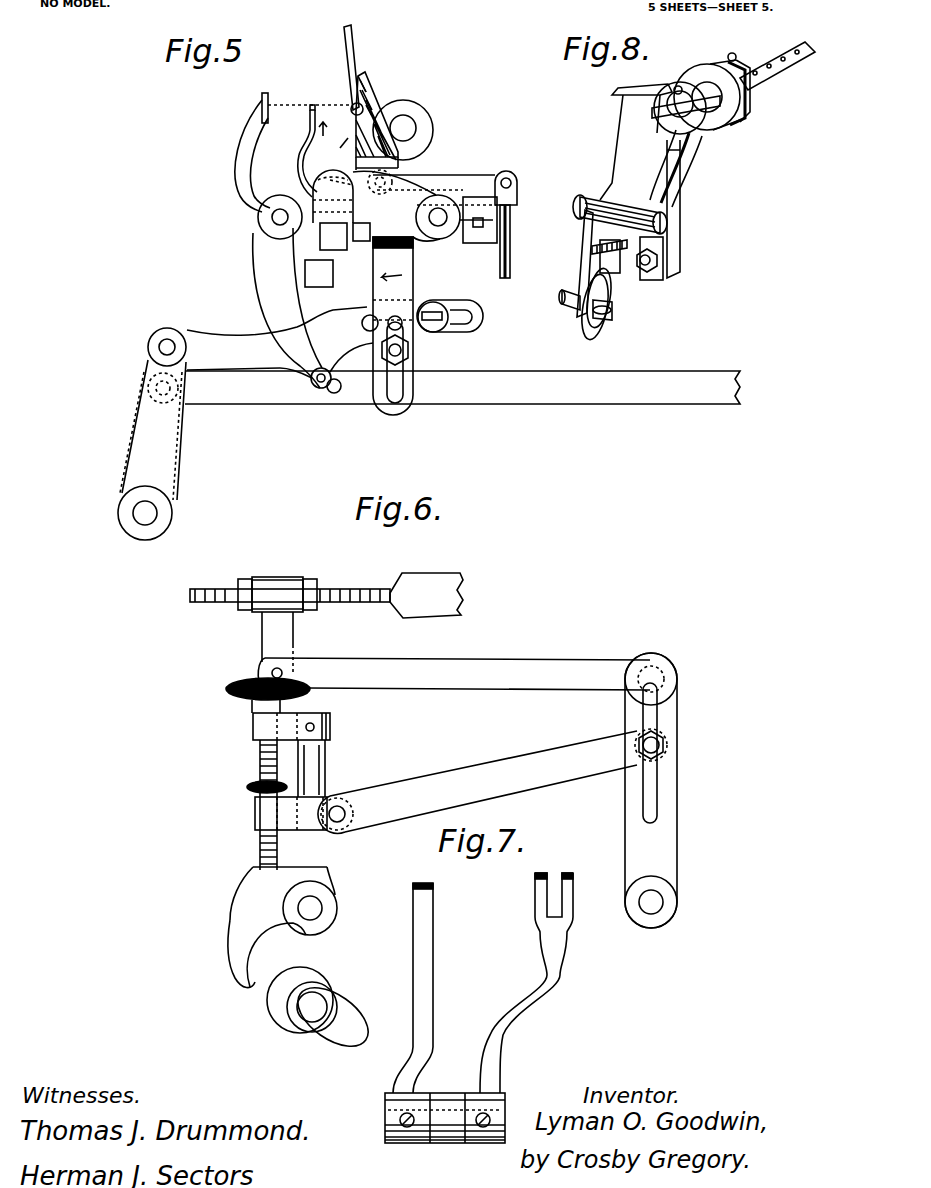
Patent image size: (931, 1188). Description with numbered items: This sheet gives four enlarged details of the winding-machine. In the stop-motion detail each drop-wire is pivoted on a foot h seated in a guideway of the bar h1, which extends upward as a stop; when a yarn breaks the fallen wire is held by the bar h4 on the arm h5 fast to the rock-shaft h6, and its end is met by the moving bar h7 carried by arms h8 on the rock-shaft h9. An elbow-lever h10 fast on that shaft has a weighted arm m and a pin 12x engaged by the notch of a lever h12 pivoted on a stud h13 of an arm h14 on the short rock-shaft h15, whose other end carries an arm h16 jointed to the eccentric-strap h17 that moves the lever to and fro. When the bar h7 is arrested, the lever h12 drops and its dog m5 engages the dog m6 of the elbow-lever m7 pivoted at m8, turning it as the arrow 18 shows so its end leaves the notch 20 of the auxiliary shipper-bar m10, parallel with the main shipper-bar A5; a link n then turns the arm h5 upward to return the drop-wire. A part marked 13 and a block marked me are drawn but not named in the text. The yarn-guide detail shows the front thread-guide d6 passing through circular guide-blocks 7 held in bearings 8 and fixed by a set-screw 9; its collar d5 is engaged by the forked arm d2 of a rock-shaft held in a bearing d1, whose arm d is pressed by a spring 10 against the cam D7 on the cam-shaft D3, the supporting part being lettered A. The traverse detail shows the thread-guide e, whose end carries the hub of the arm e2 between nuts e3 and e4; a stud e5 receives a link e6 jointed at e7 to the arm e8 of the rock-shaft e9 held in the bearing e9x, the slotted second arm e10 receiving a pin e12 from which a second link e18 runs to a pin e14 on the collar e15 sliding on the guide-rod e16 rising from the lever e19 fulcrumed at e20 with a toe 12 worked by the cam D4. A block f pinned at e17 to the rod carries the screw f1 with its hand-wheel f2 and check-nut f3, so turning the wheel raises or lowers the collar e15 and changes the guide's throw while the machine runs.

In FIG. 5, the lever 13 is at (334, 70).
In FIG. 5, the bar h1 is at (370, 100).
In FIG. 5, the foot h is at (370, 125).
In FIG. 5, the moving bar h7 is at (262, 99).
In FIG. 5, the arms h8 is at (237, 172).
In FIG. 5, the bar h4 is at (310, 120).
In FIG. 5, the arm h5 is at (299, 158).
In FIG. 5, the arm m is at (308, 197).
In FIG. 5, the thread-guide e is at (310, 126).
In FIG. 6, the thread-guide e is at (326, 592).
In FIG. 5, the rock-shaft h6 is at (403, 170).
In FIG. 5, the rock-shaft h9 is at (278, 218).
In FIG. 5, the notch 20 is at (323, 228).
In FIG. 5, the auxiliary shipper-bar m10 is at (361, 243).
In FIG. 5, the arrow 18 is at (371, 326).
In FIG. 5, the elbow-lever m7 is at (374, 283).
In FIG. 5, the shipper-bar A5 is at (323, 287).
In FIG. 5, the pivot m8 is at (440, 223).
In FIG. 5, the block me is at (477, 243).
In FIG. 5, the link n is at (512, 267).
In FIG. 5, the elbow-lever h10 is at (258, 268).
In FIG. 5, the lever h12 is at (222, 332).
In FIG. 5, the stud h13 is at (166, 338).
In FIG. 5, the arm h14 is at (147, 370).
In FIG. 5, the arm h16 is at (160, 441).
In FIG. 5, the short rock-shaft h15 is at (136, 513).
In FIG. 5, the pin 12x is at (313, 393).
In FIG. 5, the eccentric-strap h17 is at (543, 377).
In FIG. 5, the dog m5 is at (463, 337).
In FIG. 5, the dog m6 is at (415, 354).
In FIG. 8, the front thread-guide d6 is at (790, 48).
In FIG. 8, the bearings 8 is at (720, 60).
In FIG. 8, the set-screw 9 is at (736, 54).
In FIG. 8, the collar d5 is at (712, 143).
In FIG. 8, the guide-blocks 7 is at (705, 85).
In FIG. 8, the bracket plate A is at (615, 160).
In FIG. 8, the arm d2 is at (690, 167).
In FIG. 8, the bearing d1 is at (660, 235).
In FIG. 8, the spring 10 is at (625, 242).
In FIG. 8, the arm d is at (577, 267).
In FIG. 8, the cam-shaft D3 is at (612, 312).
In FIG. 6, the cam-shaft D3 is at (315, 1003).
In FIG. 8, the cam D7 is at (610, 333).
In FIG. 6, the nut e3 is at (243, 580).
In FIG. 6, the nut e4 is at (315, 581).
In FIG. 6, the arm e2 is at (262, 630).
In FIG. 6, the stud e5 is at (272, 673).
In FIG. 6, the link e6 is at (454, 663).
In FIG. 6, the hand-wheel f2 is at (227, 687).
In FIG. 6, the pin e17 is at (306, 726).
In FIG. 6, the block f is at (260, 745).
In FIG. 6, the screw f1 is at (260, 770).
In FIG. 6, the check-nut f3 is at (250, 790).
In FIG. 6, the collar e15 is at (257, 817).
In FIG. 6, the guide-rod e16 is at (325, 770).
In FIG. 6, the pin e14 is at (340, 810).
In FIG. 6, the link e18 is at (547, 753).
In FIG. 6, the joint e7 is at (675, 675).
In FIG. 6, the arm e8 is at (660, 656).
In FIG. 7, the arm e8 is at (537, 892).
In FIG. 6, the pin e12 is at (660, 745).
In FIG. 6, the rock-shaft e9 is at (670, 910).
In FIG. 7, the rock-shaft e9 is at (493, 1123).
In FIG. 6, the lever e19 is at (257, 878).
In FIG. 6, the fulcrum e20 is at (323, 907).
In FIG. 6, the toe 12 is at (235, 975).
In FIG. 6, the cam D4 is at (262, 1017).
In FIG. 7, the arm e10 is at (416, 889).
In FIG. 7, the bearing e9x is at (440, 1117).